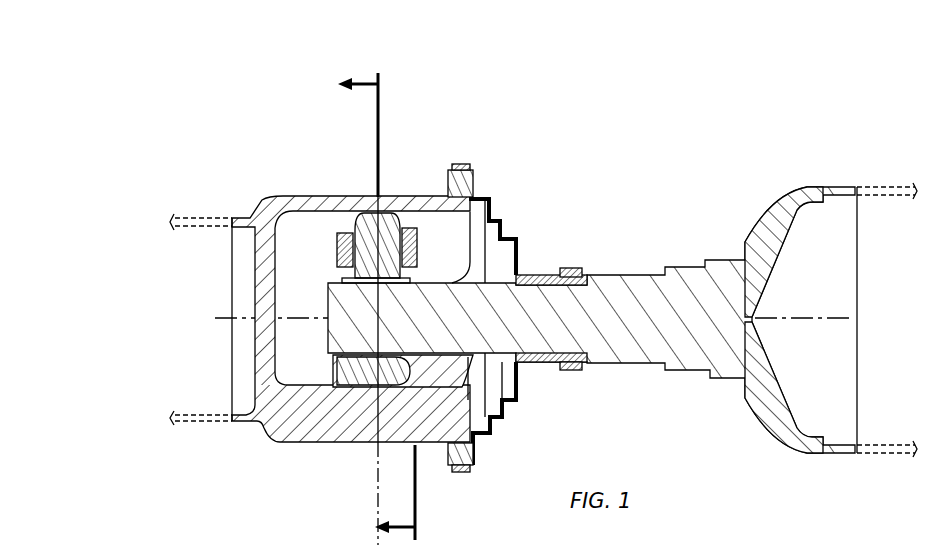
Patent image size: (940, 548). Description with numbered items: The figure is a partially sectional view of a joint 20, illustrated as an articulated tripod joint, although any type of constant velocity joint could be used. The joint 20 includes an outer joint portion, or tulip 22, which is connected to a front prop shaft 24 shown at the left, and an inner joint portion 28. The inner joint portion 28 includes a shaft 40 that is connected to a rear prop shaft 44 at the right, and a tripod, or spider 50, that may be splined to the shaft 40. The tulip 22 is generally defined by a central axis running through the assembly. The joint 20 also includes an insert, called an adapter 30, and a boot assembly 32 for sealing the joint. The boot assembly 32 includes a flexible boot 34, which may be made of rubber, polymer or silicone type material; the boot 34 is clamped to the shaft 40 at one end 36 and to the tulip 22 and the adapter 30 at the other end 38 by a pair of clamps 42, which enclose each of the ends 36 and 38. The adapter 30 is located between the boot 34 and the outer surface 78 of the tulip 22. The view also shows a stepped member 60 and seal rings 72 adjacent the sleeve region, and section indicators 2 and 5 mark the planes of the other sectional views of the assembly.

The joint 20 is at (252, 88).
The tulip 22 is at (320, 194).
The front prop shaft 24 is at (192, 217).
The inner joint portion 28 is at (365, 212).
The adapter 30 is at (444, 224).
The boot assembly 32 is at (505, 204).
The boot 34 is at (490, 428).
The one end 36 is at (576, 264).
The other end 38 is at (464, 145).
The shaft 40 is at (695, 262).
The clamps 42 is at (457, 168).
The rear prop shaft 44 is at (835, 186).
The spider 50 is at (357, 363).
The stepped sheet member 60 is at (496, 211).
The seal ring 72 is at (333, 253).
The outer surface 78 is at (354, 443).
The section line 2- 2 is at (371, 309).
The section line 5- 5 is at (409, 493).